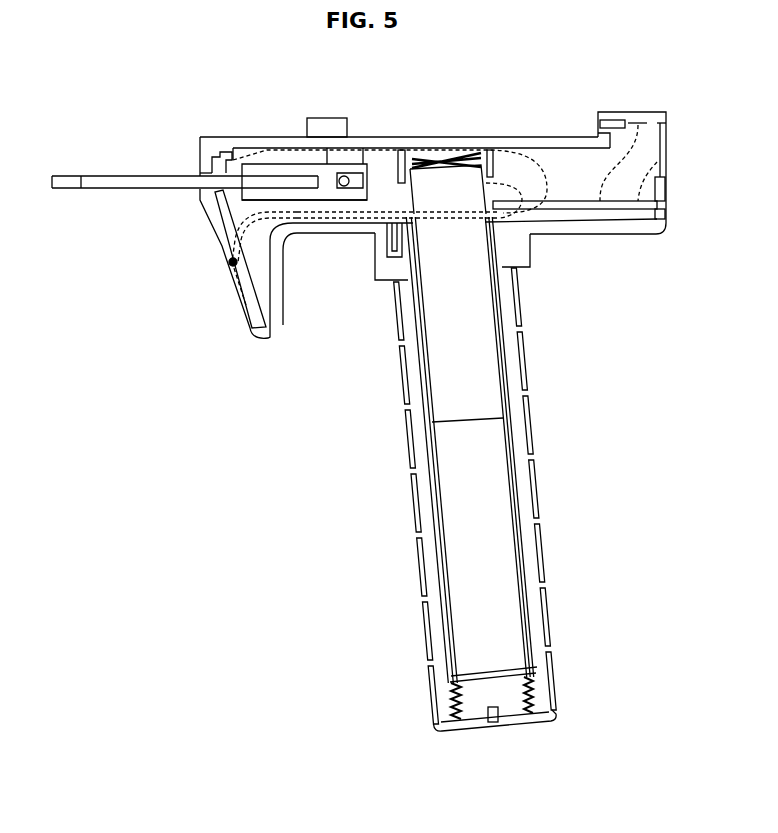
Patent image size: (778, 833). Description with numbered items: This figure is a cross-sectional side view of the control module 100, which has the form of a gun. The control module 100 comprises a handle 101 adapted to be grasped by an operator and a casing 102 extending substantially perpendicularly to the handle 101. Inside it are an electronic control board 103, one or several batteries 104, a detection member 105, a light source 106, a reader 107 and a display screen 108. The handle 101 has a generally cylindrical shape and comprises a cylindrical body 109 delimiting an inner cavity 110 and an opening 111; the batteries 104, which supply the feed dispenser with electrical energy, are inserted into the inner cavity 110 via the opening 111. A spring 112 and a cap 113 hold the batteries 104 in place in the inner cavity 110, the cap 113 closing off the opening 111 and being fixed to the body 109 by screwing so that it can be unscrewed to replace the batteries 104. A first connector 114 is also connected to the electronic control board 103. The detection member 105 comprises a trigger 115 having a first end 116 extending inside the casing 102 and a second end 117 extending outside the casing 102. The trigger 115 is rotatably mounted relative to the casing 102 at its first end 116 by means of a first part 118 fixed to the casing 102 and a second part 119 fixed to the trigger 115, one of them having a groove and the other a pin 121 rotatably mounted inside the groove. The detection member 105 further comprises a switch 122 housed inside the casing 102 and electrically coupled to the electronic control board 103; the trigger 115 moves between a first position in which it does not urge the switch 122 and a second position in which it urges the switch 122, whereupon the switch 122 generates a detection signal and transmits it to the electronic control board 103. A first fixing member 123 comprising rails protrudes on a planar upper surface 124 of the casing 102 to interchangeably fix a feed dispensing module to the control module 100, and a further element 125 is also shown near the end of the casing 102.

The control module 100 is at (291, 418).
The handle 101 is at (543, 421).
The casing 102 is at (612, 235).
The electronic control board 103 is at (565, 209).
The battery 104 is at (465, 342).
The detection member 105 is at (137, 168).
The light source 106 is at (228, 266).
The reader 107 is at (253, 299).
The display screen 108 is at (668, 147).
The cylindrical body 109 is at (524, 497).
The inner cavity 110 is at (452, 624).
The opening 111 is at (481, 695).
The spring 112 is at (446, 143).
The cap 113 is at (514, 712).
The first connector 114 is at (603, 124).
The trigger 115 is at (165, 186).
The first end 116 is at (271, 182).
The second end 117 is at (66, 173).
The first part 118 is at (348, 158).
The second part 119 is at (306, 198).
The pin 121 is at (346, 190).
The switch 122 is at (220, 160).
The first fixing member 123 is at (324, 127).
The planar upper surface 124 is at (516, 130).
The clip 125 is at (660, 206).